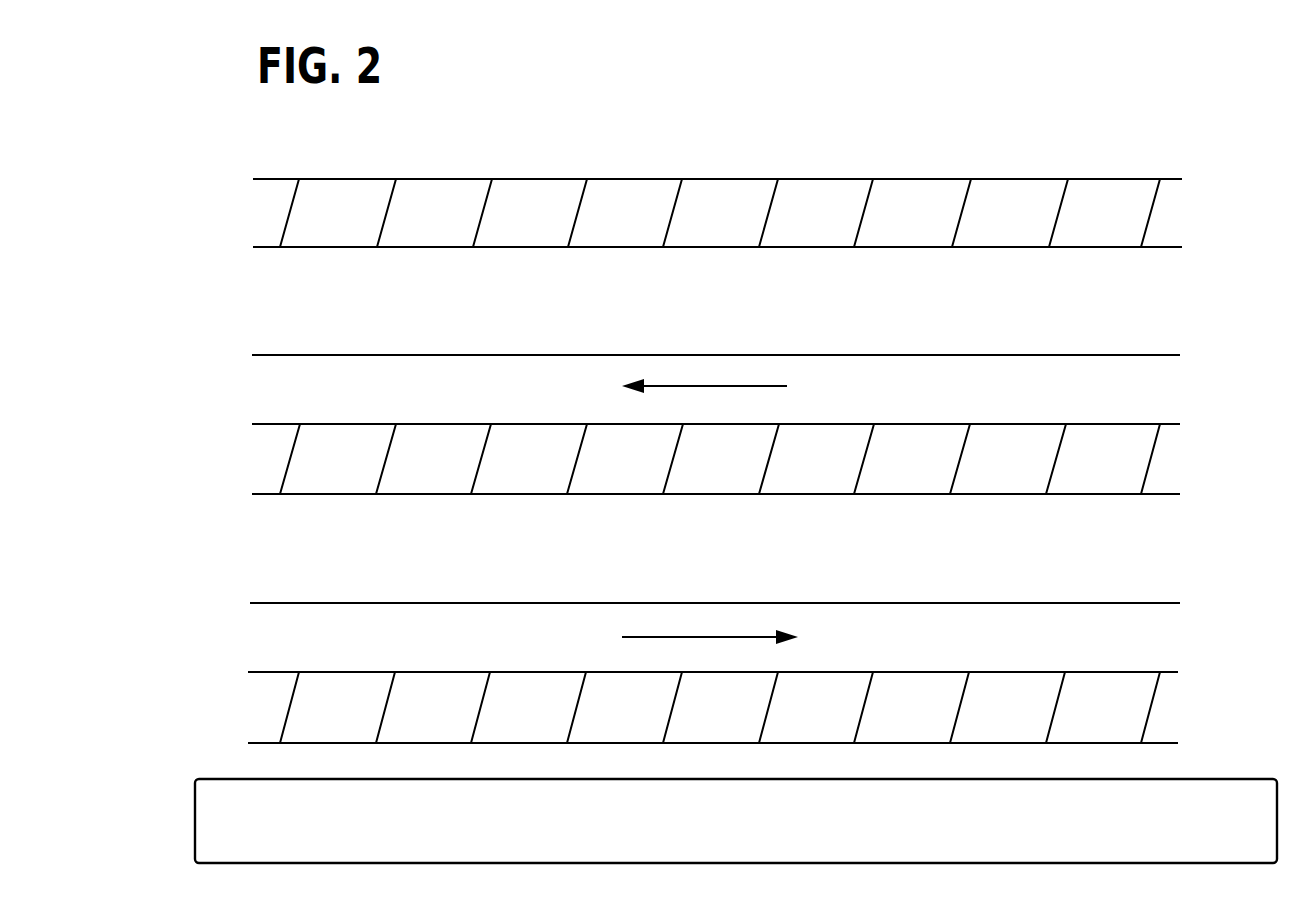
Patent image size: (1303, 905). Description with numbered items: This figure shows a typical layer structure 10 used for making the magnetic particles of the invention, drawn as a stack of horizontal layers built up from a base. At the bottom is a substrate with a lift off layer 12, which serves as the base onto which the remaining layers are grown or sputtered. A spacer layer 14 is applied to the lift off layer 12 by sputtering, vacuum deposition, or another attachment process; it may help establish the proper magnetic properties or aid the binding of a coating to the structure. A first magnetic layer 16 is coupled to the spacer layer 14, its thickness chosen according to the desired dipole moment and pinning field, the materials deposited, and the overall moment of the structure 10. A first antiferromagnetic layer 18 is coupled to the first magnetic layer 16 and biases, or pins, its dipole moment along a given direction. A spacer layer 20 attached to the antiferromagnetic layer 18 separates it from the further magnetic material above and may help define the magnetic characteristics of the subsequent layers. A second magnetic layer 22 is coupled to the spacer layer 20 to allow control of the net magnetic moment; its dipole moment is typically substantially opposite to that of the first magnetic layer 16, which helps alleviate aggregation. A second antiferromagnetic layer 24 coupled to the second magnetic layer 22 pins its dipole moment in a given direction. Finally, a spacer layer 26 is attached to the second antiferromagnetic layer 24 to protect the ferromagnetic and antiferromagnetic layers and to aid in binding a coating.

The layer structure 10 is at (718, 118).
The lift off layer 12 is at (1178, 766).
The spacer layer 14 is at (1178, 710).
The first magnetic layer 16 is at (1178, 640).
The first antiferromagnetic layer 18 is at (1180, 550).
The spacer layer 20 is at (1184, 462).
The second magnetic layer 22 is at (1184, 390).
The second antiferromagnetic layer 24 is at (1184, 303).
The spacer layer 26 is at (1184, 220).